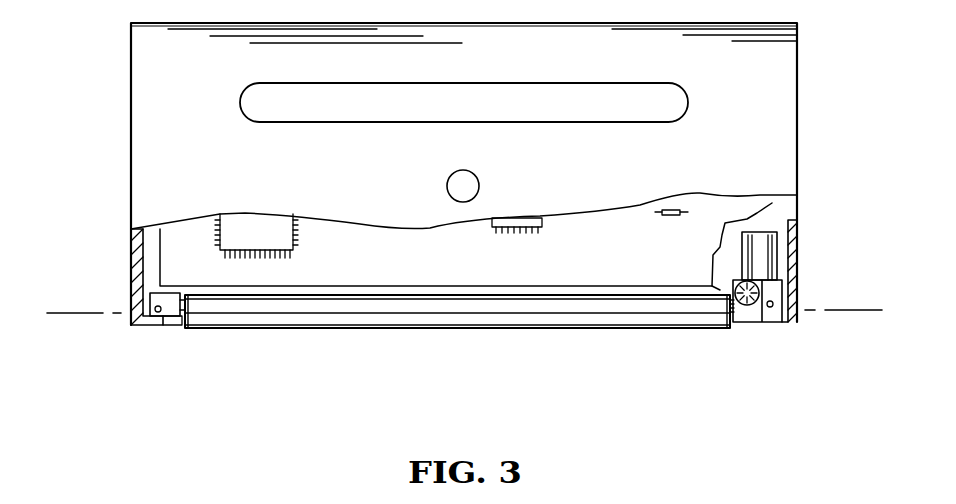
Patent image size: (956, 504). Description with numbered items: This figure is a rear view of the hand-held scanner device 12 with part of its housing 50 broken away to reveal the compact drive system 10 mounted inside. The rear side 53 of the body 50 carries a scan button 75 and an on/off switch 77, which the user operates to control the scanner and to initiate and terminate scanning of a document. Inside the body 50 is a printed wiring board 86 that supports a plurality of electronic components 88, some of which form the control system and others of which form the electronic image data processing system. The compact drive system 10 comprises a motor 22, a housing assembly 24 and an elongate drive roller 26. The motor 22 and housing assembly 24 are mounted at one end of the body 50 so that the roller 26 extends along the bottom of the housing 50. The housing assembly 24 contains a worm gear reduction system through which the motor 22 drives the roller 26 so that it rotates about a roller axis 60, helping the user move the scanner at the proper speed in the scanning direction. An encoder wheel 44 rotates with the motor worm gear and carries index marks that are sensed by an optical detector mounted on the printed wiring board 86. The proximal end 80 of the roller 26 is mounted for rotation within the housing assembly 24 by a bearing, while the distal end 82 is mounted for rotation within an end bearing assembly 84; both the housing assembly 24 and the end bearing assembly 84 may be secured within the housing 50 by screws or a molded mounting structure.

The compact drive system 10 is at (109, 250).
The hand-held scanner device 12 is at (131, 123).
The motor 22 is at (720, 252).
The housing assembly 24 is at (790, 290).
The drive roller 26 is at (463, 327).
The encoder wheel 44 is at (748, 306).
The housing 50 is at (797, 62).
The rear side 53 is at (538, 67).
The roller axis 60 is at (86, 315).
The scan button 75 is at (565, 122).
The on/off switch 77 is at (447, 183).
The proximal end 80 is at (722, 328).
The distal end 82 is at (196, 330).
The end bearing assembly 84 is at (170, 328).
The printed wiring board 86 is at (793, 212).
The electronic components 88 is at (293, 252).